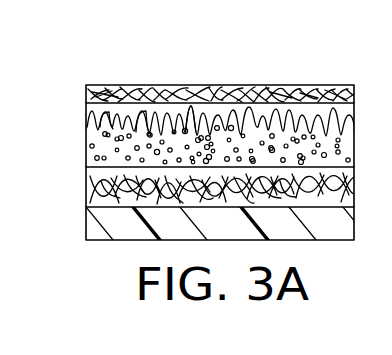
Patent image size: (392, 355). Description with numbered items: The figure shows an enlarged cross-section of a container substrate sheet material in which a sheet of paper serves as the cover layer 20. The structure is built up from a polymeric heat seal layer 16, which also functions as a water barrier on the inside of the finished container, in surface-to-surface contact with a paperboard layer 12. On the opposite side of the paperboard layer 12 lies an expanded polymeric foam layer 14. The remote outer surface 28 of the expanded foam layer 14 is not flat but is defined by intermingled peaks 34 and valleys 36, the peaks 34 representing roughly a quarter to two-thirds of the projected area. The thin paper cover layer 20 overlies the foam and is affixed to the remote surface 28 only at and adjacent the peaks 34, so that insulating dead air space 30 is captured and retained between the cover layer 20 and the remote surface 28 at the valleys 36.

The cover layer 20 is at (243, 101).
The remote outer surface 28 is at (248, 101).
The valleys 36 is at (113, 113).
The dead air space 30 is at (107, 113).
The peaks 34 is at (202, 110).
The expanded polymeric foam layer 14 is at (86, 142).
The paperboard layer 12 is at (86, 190).
The polymeric heat seal layer 16 is at (86, 227).